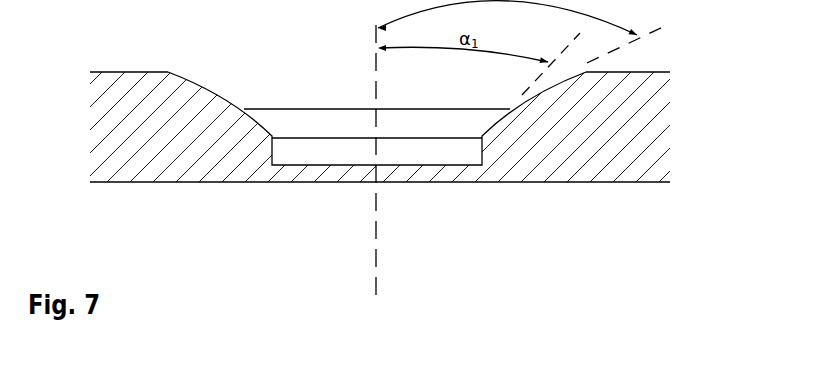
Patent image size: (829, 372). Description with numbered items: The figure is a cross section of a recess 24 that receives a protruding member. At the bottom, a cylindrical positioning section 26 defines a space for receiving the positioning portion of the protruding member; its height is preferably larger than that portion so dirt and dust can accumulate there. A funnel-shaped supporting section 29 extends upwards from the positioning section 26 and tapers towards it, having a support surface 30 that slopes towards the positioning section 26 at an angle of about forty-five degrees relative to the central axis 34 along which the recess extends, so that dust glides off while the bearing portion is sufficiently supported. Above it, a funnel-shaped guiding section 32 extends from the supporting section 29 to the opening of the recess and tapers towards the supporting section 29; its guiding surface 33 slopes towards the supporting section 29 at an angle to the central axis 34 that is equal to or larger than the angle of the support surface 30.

The recess 24 is at (213, 63).
The positioning section 26 is at (299, 156).
The supporting section 29 is at (326, 121).
The support surface 30 is at (496, 123).
The guiding section 32 is at (406, 97).
The guiding surface 33 is at (550, 88).
The central axis 34 is at (376, 28).